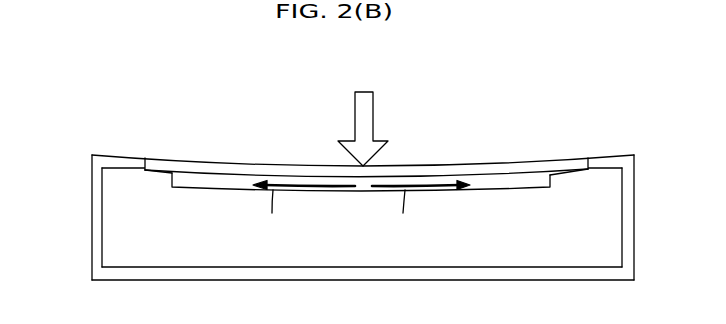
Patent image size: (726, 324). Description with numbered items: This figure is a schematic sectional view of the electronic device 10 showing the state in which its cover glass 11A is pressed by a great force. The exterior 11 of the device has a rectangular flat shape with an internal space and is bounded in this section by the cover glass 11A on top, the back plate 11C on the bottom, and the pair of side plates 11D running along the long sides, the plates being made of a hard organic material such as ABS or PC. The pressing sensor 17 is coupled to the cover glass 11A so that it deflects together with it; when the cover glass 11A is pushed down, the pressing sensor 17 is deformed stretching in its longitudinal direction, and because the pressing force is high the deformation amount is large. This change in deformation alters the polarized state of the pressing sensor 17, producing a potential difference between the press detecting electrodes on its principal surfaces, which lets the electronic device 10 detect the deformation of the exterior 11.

The electronic device 10 is at (153, 138).
The exterior 11 is at (634, 155).
The cover glass 11A is at (429, 166).
The back plate 11C is at (473, 272).
The side plates 11D is at (90, 213).
The pressing sensor 17 is at (534, 180).